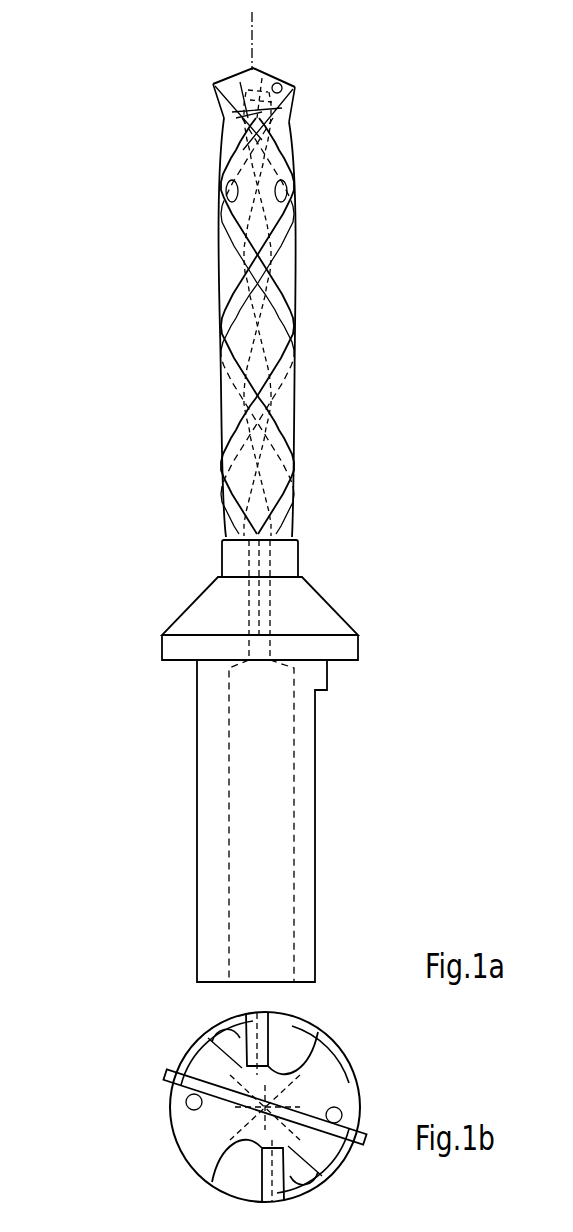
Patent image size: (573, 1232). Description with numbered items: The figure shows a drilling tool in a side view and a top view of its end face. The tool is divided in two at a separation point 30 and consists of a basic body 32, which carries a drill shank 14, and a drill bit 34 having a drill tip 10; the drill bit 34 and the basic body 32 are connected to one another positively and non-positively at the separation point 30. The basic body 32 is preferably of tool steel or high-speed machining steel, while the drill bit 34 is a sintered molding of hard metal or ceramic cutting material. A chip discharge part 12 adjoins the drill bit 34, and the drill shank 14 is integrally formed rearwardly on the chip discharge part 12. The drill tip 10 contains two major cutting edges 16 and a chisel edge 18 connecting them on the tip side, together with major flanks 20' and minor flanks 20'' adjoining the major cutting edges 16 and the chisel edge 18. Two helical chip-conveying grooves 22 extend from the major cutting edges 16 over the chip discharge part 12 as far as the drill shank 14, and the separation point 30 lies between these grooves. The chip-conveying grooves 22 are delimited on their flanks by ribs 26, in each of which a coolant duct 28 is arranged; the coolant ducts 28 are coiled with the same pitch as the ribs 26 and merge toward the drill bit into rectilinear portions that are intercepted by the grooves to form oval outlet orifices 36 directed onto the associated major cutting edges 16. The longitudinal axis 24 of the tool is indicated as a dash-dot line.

In FIG. 1A, the drill tip 10 is at (253, 68).
In FIG. 1A, the chip discharge part 12 is at (282, 287).
In FIG. 1A, the drill shank 14 is at (310, 805).
In FIG. 1B, the major cutting edges 16 is at (183, 1108).
In FIG. 1B, the chisel edge 18 is at (224, 1042).
In FIG. 1B, the major flanks 20' is at (240, 1075).
In FIG. 1B, the minor flanks 20'' is at (226, 1094).
In FIG. 1A, the chip-conveying grooves 22 is at (256, 217).
In FIG. 1A, the longitudinal axis 24 is at (252, 50).
In FIG. 1A, the ribs 26 is at (233, 153).
In FIG. 1A, the coolant duct 28 is at (220, 214).
In FIG. 1A, the separation point 30 is at (236, 118).
In FIG. 1A, the basic body 32 is at (280, 505).
In FIG. 1A, the drill bit 34 is at (297, 88).
In FIG. 1A, the outlet orifice 36 is at (295, 182).
In FIG. 1B, the outlet orifice 36 is at (188, 1100).